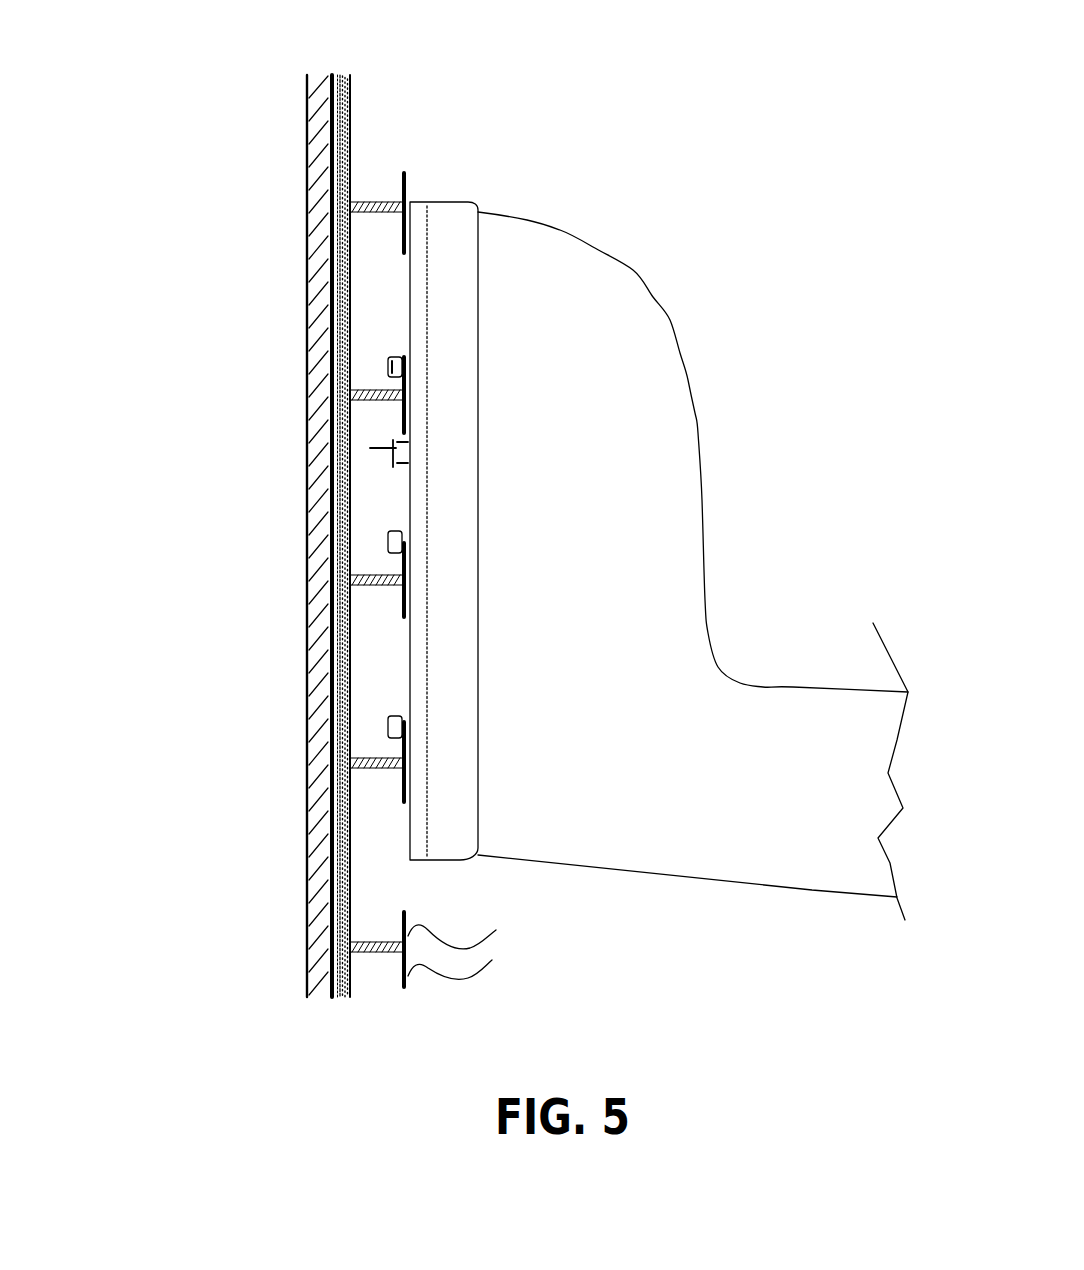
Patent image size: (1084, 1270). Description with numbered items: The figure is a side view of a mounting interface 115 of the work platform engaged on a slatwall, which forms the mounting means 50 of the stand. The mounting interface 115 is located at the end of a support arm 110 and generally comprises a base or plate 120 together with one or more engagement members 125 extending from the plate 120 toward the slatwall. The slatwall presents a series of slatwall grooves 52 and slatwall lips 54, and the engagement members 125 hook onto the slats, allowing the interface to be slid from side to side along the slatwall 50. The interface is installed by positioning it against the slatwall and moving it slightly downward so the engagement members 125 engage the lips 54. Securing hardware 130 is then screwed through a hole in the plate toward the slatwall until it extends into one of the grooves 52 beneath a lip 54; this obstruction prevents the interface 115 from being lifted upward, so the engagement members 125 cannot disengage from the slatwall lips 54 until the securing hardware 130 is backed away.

The mounting means 50 is at (396, 82).
The slatwall groove 52 is at (368, 840).
The slatwall lip 54 is at (480, 957).
The support arm 110 is at (610, 581).
The mounting interface 115 is at (492, 160).
The plate 120 is at (420, 203).
The engagement member 125 is at (396, 356).
The securing hardware 130 is at (392, 449).